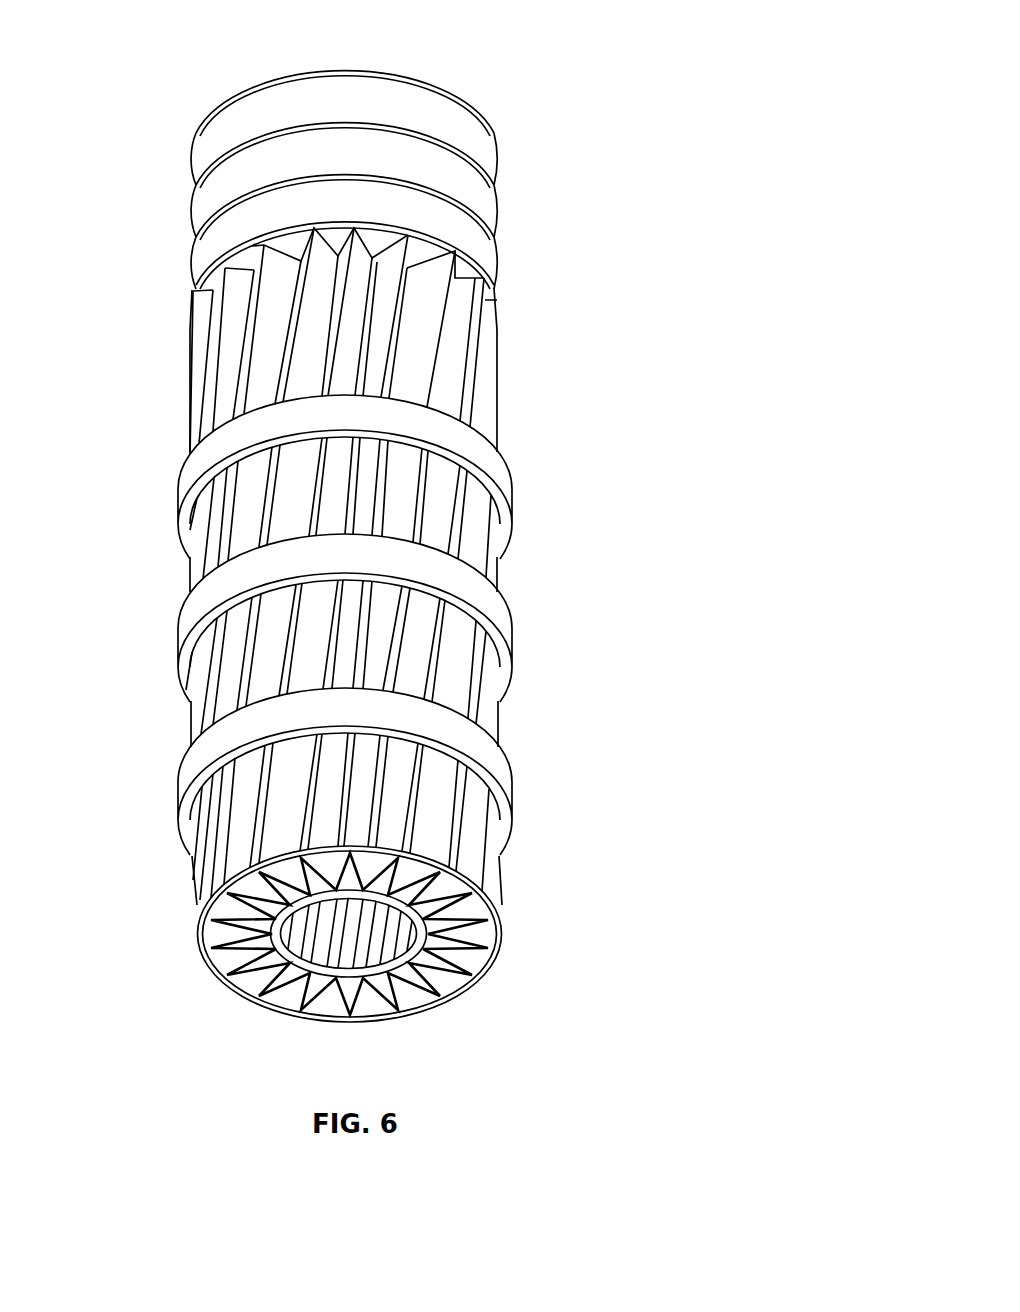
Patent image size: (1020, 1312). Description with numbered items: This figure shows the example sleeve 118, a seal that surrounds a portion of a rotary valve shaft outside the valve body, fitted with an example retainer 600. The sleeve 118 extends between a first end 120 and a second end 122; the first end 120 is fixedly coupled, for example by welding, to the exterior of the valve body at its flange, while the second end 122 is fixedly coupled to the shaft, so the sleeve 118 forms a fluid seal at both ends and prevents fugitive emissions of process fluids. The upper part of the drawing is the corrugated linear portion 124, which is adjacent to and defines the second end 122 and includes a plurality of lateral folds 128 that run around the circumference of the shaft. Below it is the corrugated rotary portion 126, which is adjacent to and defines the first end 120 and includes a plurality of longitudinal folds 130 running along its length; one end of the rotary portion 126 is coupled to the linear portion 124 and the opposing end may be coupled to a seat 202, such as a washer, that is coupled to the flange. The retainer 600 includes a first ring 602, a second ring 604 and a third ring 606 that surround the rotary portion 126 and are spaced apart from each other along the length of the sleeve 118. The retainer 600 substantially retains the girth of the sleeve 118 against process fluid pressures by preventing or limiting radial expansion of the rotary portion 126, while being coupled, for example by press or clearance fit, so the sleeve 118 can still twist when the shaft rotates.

The sleeve 118 is at (627, 47).
The first end 120 is at (460, 970).
The second end 122 is at (457, 95).
The linear portion 124 is at (331, 178).
The rotary portion 126 is at (377, 646).
The lateral folds 128 is at (463, 207).
The longitudinal folds 130 is at (437, 350).
The seat 202 is at (342, 962).
The retainer 600 is at (431, 625).
The first ring 602 is at (514, 481).
The second ring 604 is at (514, 631).
The third ring 606 is at (514, 780).